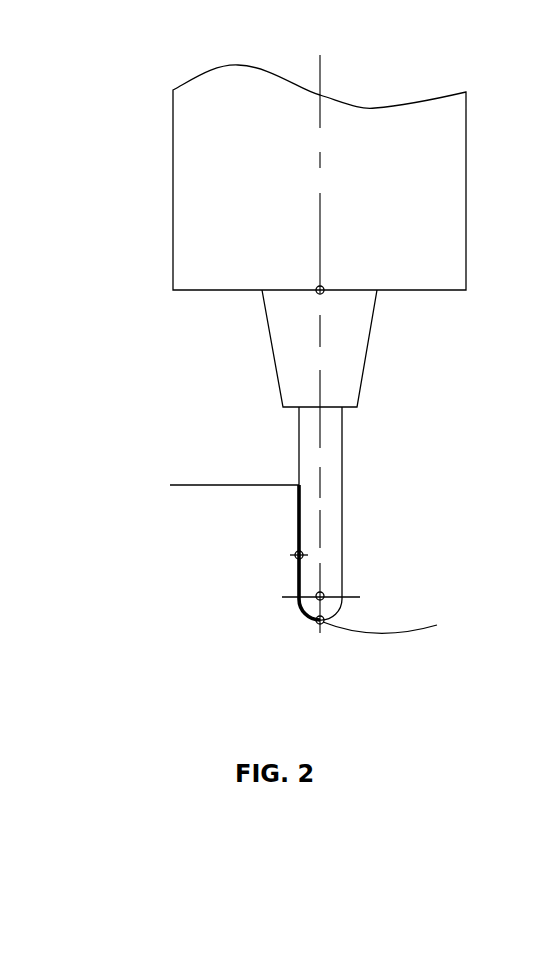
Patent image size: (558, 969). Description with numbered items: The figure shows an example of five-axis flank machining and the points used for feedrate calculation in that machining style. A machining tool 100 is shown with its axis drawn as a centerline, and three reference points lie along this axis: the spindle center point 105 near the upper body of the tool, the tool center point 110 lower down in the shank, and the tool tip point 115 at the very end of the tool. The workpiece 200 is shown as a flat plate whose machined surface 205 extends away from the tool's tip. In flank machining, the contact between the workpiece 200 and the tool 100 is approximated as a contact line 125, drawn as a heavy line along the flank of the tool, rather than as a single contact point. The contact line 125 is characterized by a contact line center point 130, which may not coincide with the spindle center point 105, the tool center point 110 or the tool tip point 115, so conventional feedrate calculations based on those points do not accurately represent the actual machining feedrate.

The machining tool 100 is at (310, 463).
The spindle center point 105 is at (325, 293).
The tool center point 110 is at (325, 591).
The tool tip point 115 is at (326, 624).
The contact line 125 is at (293, 580).
The contact line center point 130 is at (293, 553).
The workpiece 200 is at (226, 483).
The machined surface 205 is at (403, 626).